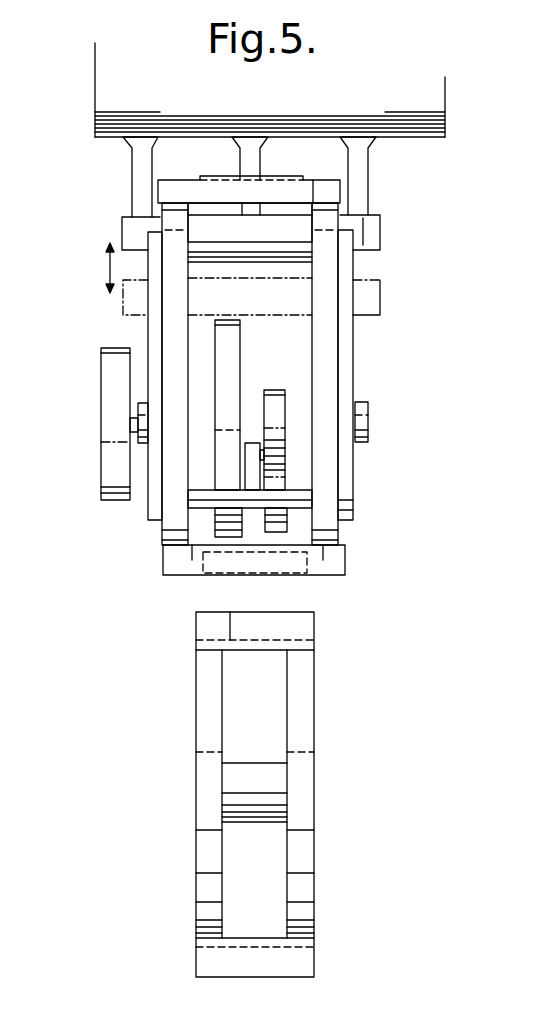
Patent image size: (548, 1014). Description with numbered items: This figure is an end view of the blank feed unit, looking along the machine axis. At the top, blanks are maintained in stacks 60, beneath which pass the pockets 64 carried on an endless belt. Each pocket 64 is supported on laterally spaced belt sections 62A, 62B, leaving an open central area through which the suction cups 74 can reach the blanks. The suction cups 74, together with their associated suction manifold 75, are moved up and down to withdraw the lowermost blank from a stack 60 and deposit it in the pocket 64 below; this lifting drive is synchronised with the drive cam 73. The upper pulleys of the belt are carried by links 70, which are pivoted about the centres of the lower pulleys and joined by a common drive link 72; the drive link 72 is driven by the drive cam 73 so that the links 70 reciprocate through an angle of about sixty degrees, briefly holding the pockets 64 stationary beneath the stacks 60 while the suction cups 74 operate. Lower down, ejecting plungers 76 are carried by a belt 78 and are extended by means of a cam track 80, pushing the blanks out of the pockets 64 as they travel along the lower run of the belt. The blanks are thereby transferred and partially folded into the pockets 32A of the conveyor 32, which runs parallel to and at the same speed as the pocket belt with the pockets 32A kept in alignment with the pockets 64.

The stacks 60 is at (425, 101).
The suction cups 74 is at (247, 152).
The pockets 64 is at (175, 190).
The suction manifold 75 is at (380, 223).
The links 70 is at (150, 265).
The belt section 62A is at (175, 297).
The belt section 62B is at (324, 288).
The belt 78 is at (228, 350).
The cam track 80 is at (278, 405).
The common drive link 72 is at (143, 415).
The drive cam 73 is at (115, 470).
The ejecting plungers 76 is at (325, 568).
The conveyor 32 is at (300, 707).
The pockets 32A is at (198, 622).